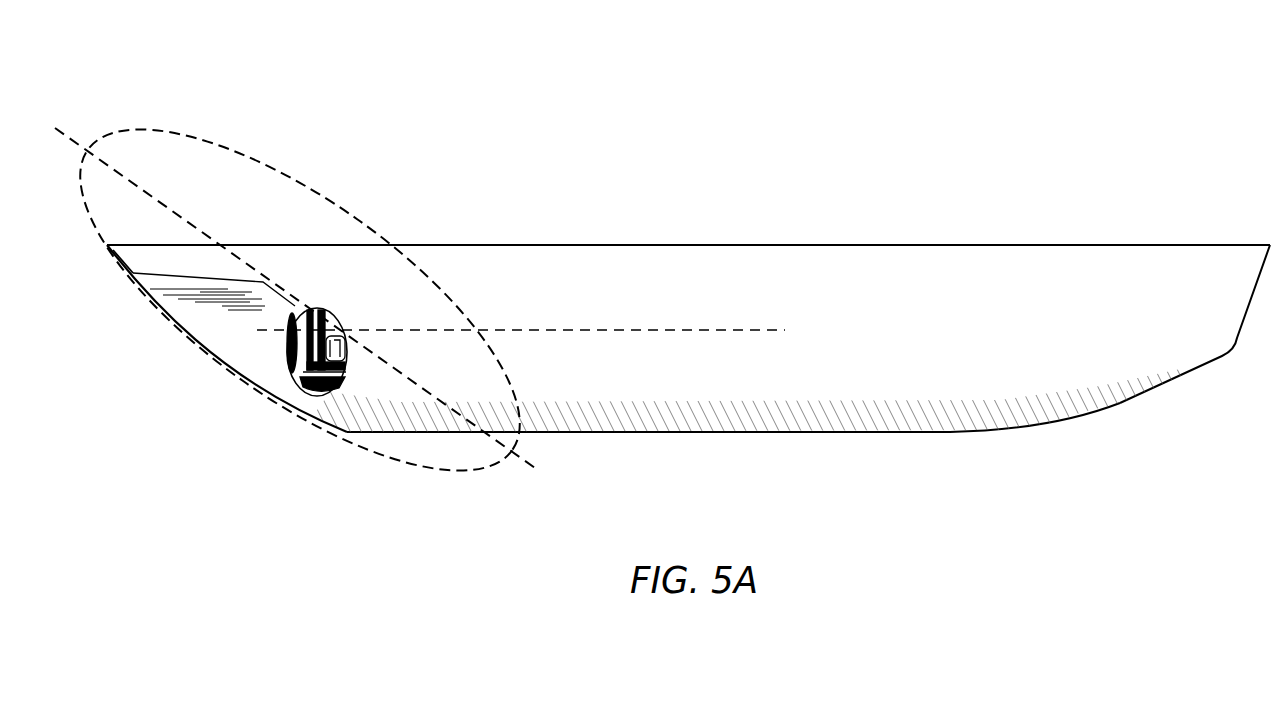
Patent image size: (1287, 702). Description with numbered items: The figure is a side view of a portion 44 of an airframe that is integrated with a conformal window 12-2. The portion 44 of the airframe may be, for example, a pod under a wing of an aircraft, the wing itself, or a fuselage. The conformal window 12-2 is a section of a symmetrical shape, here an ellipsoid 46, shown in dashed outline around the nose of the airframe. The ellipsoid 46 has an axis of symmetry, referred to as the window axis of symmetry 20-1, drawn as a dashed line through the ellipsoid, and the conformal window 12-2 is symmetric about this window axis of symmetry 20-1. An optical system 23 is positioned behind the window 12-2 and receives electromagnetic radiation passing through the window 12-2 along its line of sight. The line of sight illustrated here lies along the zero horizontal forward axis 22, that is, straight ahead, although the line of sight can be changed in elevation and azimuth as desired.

The conformal window 12-2 is at (247, 345).
The window axis of symmetry 20-1 is at (84, 149).
The zero horizontal forward axis 22 is at (615, 332).
The optical system 23 is at (291, 309).
The portion of an airframe 44 is at (1121, 403).
The ellipsoid 46 is at (158, 132).